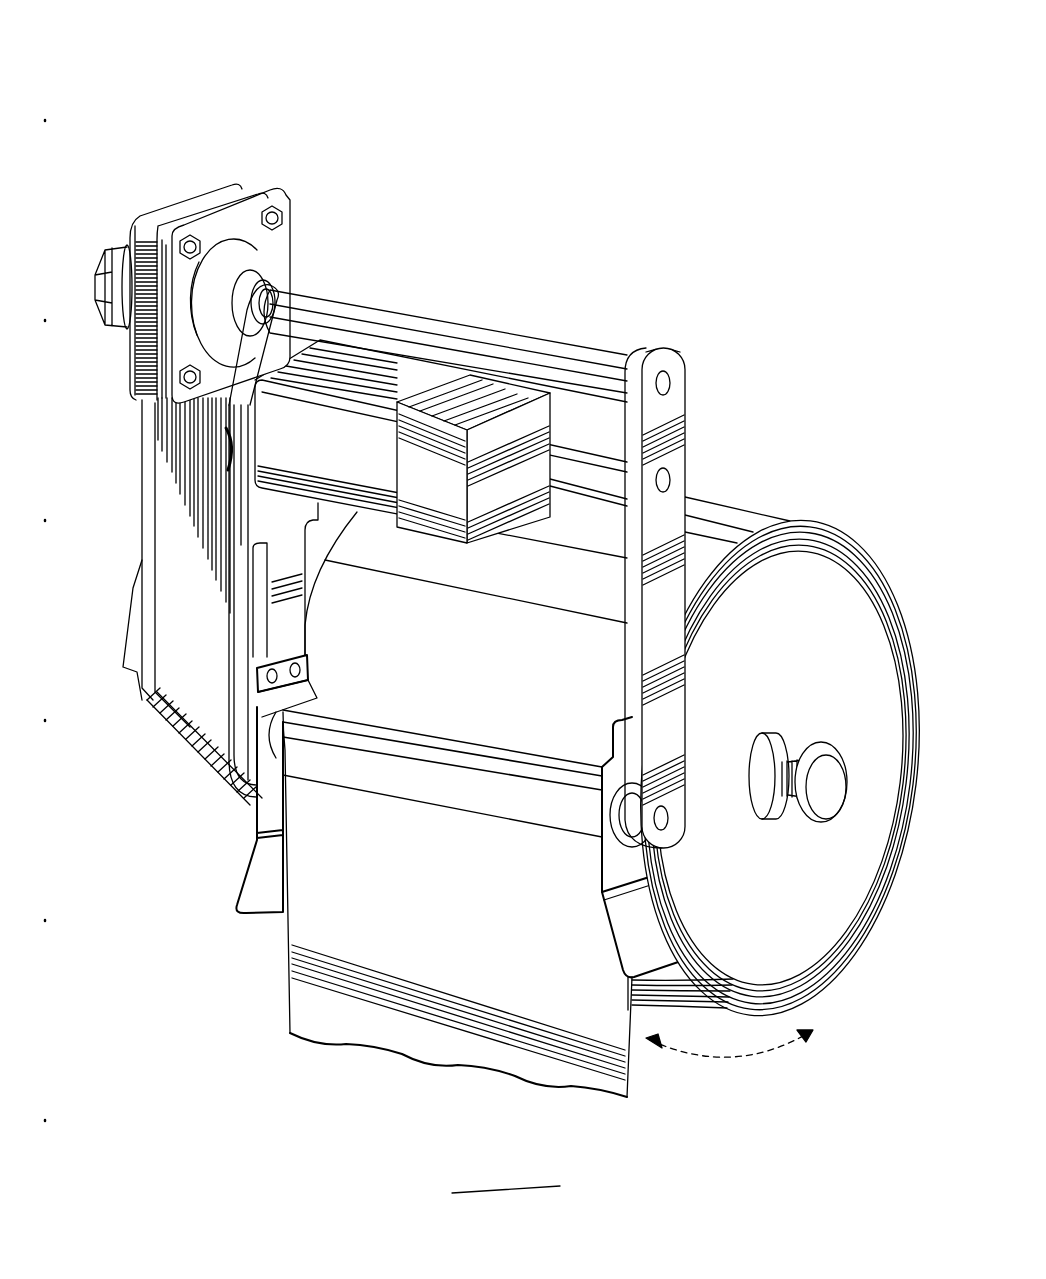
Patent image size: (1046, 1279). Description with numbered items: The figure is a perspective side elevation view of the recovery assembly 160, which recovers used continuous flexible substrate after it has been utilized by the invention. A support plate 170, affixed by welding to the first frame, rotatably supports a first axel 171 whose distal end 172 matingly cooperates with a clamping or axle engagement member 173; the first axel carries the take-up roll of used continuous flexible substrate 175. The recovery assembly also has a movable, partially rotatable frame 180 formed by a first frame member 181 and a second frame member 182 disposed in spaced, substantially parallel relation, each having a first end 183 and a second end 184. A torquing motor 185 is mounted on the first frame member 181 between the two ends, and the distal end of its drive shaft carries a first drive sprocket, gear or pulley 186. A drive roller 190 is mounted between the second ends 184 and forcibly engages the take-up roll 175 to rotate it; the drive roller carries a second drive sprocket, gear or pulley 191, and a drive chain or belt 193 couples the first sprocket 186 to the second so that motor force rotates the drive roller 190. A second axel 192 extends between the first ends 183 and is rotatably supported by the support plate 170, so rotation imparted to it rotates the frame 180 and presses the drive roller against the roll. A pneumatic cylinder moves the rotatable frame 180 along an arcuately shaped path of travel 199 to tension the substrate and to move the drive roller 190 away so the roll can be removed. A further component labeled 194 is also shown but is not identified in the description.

The recovery assembly 160 is at (185, 95).
The support plate 170 is at (387, 297).
The first axel 171 is at (764, 820).
The distal end 172 is at (785, 752).
The clamping or axle engagement member 173 is at (824, 780).
The take-up roll of used continuous flexible substrate 175 is at (492, 670).
The rotatable frame 180 is at (775, 299).
The first frame member 181 is at (292, 618).
The second frame member 182 is at (678, 457).
The first end 183 is at (263, 293).
The second end 184 is at (683, 830).
The torquing motor 185 is at (428, 410).
The first drive sprocket, gear or pulley 186 is at (227, 453).
The drive roller 190 is at (233, 783).
The second drive sprocket, gear or pulley 191 is at (237, 777).
The second axel 192 is at (583, 352).
The drive chain or belt 193 is at (232, 653).
The mounting plate 194 is at (218, 195).
The arcuately shaped path of travel 199 is at (735, 1072).